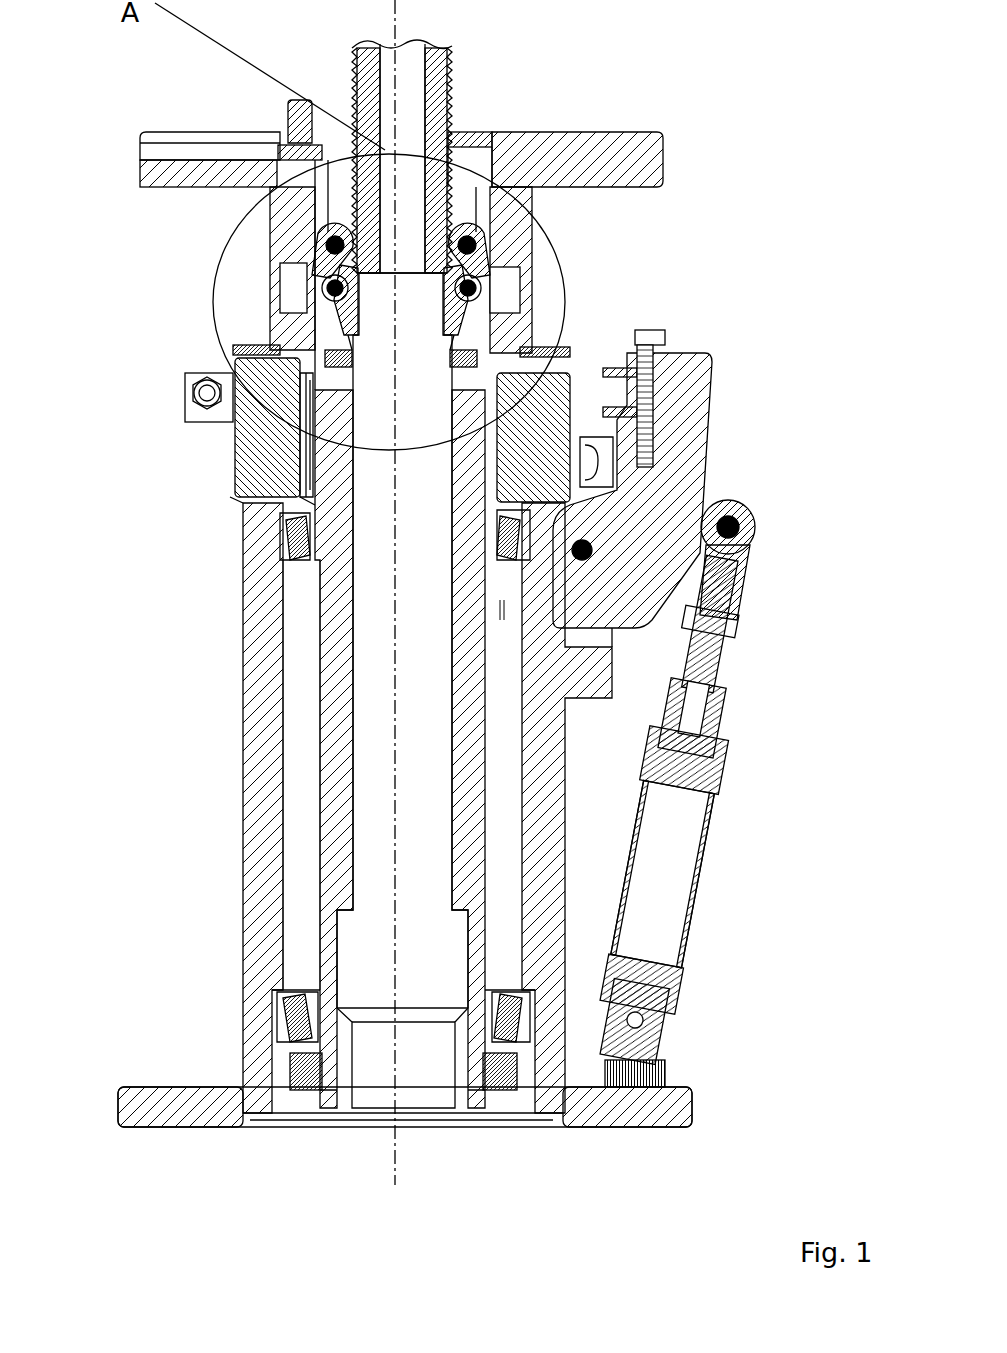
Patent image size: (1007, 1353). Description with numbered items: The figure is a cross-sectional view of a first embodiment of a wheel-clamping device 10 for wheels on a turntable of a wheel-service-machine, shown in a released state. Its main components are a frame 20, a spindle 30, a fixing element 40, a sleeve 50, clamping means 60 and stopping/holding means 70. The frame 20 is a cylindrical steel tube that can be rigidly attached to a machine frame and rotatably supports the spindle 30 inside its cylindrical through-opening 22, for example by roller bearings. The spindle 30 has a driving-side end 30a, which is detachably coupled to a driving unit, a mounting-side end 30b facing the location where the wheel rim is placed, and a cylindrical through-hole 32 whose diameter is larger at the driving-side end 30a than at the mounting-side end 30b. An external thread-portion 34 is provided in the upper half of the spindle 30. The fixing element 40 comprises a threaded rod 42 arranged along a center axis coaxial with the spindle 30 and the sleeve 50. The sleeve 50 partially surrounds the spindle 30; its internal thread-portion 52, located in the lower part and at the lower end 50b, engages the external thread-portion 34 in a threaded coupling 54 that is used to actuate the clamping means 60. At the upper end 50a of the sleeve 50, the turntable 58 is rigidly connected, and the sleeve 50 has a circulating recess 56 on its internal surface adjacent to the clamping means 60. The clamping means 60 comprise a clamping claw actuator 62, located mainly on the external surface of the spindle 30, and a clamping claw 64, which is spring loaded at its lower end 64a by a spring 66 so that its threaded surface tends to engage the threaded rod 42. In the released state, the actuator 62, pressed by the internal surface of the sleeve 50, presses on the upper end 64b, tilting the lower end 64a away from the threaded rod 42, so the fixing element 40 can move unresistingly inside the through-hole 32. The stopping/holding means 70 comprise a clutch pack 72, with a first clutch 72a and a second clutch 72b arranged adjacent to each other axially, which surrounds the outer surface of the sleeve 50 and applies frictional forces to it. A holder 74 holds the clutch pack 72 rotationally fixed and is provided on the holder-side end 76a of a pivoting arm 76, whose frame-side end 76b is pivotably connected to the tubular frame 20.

The wheel-clamping device 10 is at (718, 28).
The frame 20 is at (260, 790).
The cylindrical through-opening 22 is at (290, 870).
The spindle 30 is at (313, 585).
The driving-side end 30a is at (330, 1100).
The mounting-side end 30b is at (470, 135).
The cylindrical through-hole 32 is at (360, 580).
The external thread-portion 34 is at (320, 500).
The fixing element 40 is at (425, 140).
The threaded rod 42 is at (378, 148).
The sleeve 50 is at (405, 329).
The upper end of sleeve 50a is at (530, 217).
The lower end of sleeve 50b is at (290, 430).
The internal thread-portion 52 is at (312, 450).
The threaded coupling 54 is at (320, 475).
The recess 56 is at (502, 277).
The turntable 58 is at (640, 147).
The clamping means 60 is at (357, 263).
The clamping claw actuator 62 is at (322, 240).
The clamping claw 64 is at (478, 287).
The lower end of clamping claw 64a is at (330, 330).
The upper end of clamping claw 64b is at (338, 276).
The spring 66 is at (468, 328).
The stopping/holding means 70 is at (695, 470).
The clutch pack 72 is at (292, 423).
The first clutch 72a is at (190, 385).
The second clutch 72b is at (600, 440).
The holder 74 is at (780, 536).
The pivoting arm 76 is at (717, 819).
The holder-side end 76a is at (742, 540).
The frame-side end 76b is at (643, 1045).